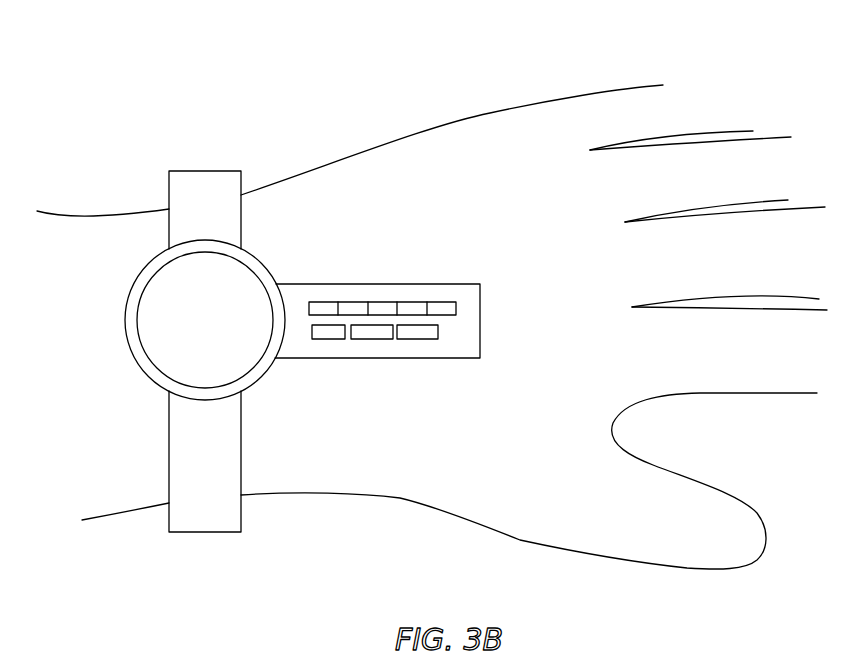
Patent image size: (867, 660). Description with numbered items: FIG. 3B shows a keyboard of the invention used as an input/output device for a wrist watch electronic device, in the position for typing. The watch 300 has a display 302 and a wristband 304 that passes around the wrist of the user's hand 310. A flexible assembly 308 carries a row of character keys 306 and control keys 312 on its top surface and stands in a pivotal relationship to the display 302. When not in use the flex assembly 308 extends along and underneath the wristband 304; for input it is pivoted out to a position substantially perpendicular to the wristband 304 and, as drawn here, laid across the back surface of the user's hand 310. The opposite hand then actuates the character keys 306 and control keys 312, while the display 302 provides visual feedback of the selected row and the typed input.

The watch 300 is at (266, 343).
The display 302 is at (180, 357).
The wristband 304 is at (218, 532).
The character keys 306 is at (412, 296).
The flexible assembly 308 is at (298, 335).
The user's hand 310 is at (435, 96).
The control keys 312 is at (400, 354).